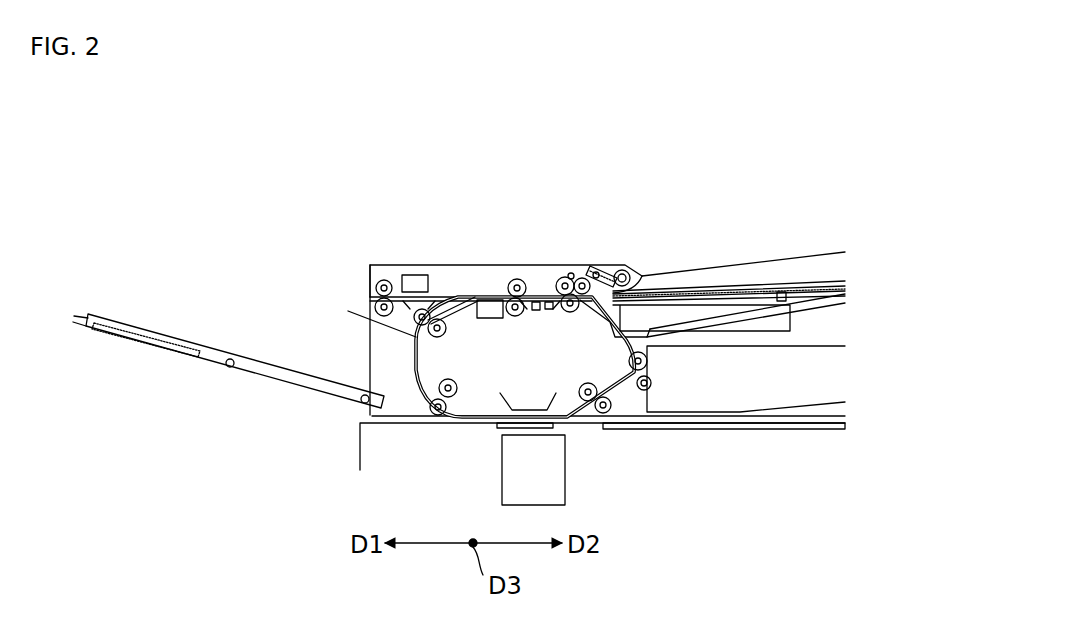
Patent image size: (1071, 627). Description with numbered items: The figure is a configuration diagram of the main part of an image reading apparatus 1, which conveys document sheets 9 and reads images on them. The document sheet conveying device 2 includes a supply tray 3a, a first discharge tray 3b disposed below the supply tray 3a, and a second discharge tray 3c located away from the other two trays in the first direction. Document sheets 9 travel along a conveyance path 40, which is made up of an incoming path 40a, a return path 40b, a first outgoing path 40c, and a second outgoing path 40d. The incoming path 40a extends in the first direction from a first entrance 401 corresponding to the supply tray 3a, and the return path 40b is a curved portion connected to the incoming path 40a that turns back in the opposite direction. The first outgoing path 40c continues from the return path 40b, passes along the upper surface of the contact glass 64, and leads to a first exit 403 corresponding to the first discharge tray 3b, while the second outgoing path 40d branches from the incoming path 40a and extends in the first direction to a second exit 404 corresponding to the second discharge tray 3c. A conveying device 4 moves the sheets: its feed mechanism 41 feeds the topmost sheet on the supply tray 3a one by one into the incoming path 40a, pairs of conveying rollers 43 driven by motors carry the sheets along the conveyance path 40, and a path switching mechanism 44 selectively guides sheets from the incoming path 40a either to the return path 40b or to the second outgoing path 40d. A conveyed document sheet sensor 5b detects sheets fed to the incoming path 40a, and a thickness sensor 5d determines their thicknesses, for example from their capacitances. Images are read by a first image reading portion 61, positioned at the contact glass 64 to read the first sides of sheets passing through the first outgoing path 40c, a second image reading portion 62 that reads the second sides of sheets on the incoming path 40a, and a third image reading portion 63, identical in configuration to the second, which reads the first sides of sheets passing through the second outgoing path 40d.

The image reading apparatus 1 is at (824, 150).
The document sheet conveying device 2 is at (712, 242).
The supply tray 3a is at (828, 304).
The first discharge tray 3b is at (741, 411).
The second discharge tray 3c is at (242, 374).
The conveying device 4 is at (504, 246).
The conveyed document sheet sensor 5b is at (550, 310).
The thickness sensor 5d is at (534, 311).
The document sheets 9 is at (761, 288).
The conveyance path 40 is at (460, 288).
The incoming path 40a is at (537, 295).
The return path 40b is at (350, 312).
The first outgoing path 40c is at (464, 415).
The second outgoing path 40d is at (394, 283).
The feed mechanism 41 is at (604, 266).
The pairs of conveying rollers 43 is at (373, 320).
The path switching mechanism 44 is at (443, 295).
The first entrance 401 is at (640, 285).
The first exit 403 is at (651, 368).
The second exit 404 is at (372, 297).
The first image reading portion 61 is at (567, 460).
The second image reading portion 62 is at (487, 319).
The third image reading portion 63 is at (417, 274).
The contact glass 64 is at (553, 426).